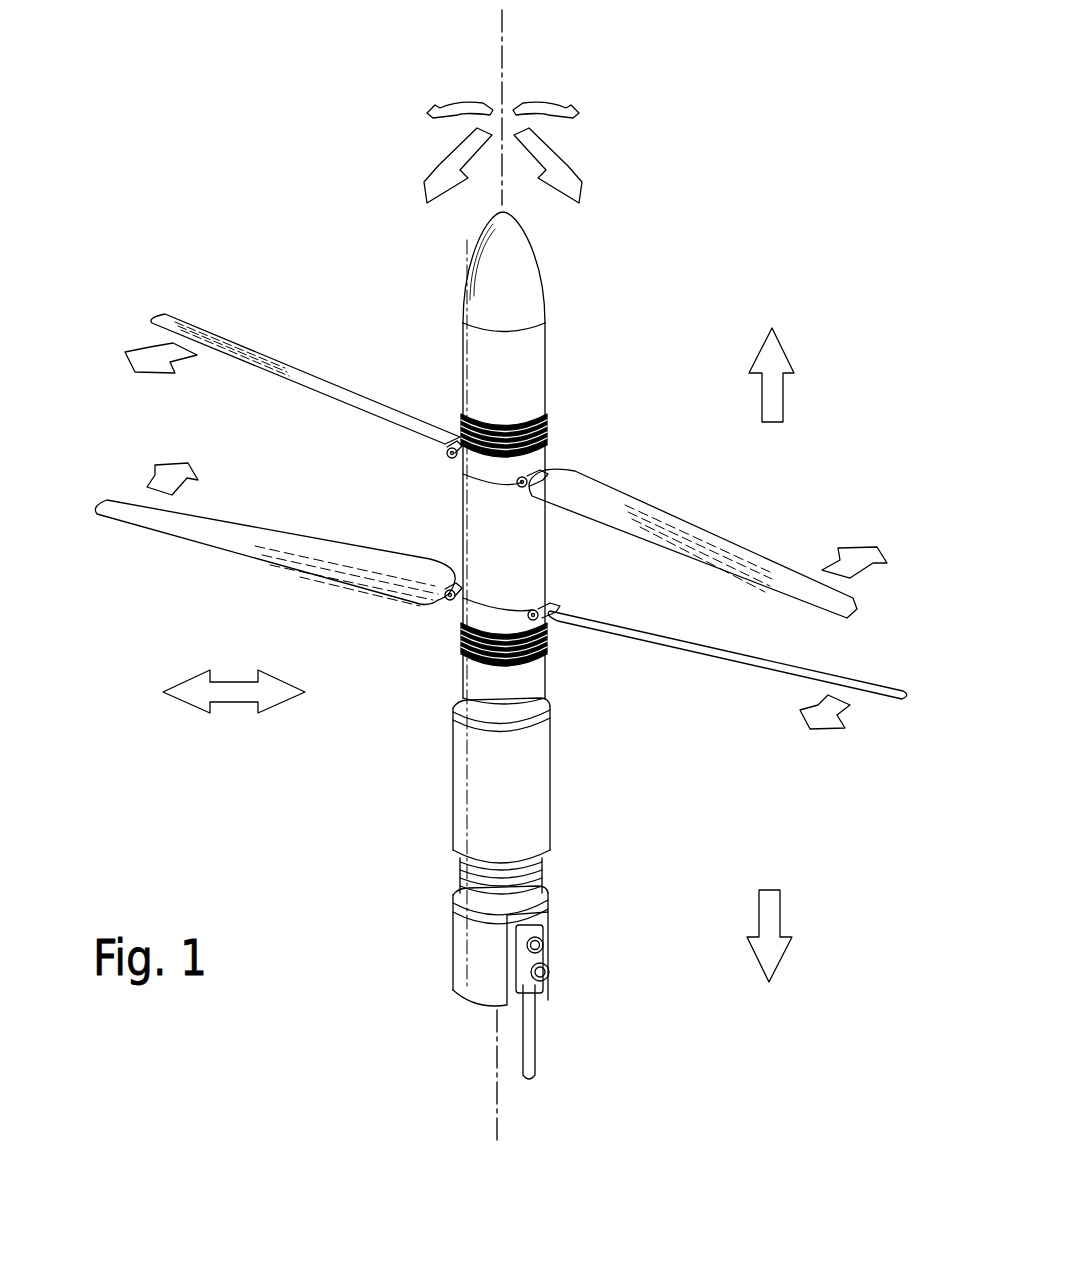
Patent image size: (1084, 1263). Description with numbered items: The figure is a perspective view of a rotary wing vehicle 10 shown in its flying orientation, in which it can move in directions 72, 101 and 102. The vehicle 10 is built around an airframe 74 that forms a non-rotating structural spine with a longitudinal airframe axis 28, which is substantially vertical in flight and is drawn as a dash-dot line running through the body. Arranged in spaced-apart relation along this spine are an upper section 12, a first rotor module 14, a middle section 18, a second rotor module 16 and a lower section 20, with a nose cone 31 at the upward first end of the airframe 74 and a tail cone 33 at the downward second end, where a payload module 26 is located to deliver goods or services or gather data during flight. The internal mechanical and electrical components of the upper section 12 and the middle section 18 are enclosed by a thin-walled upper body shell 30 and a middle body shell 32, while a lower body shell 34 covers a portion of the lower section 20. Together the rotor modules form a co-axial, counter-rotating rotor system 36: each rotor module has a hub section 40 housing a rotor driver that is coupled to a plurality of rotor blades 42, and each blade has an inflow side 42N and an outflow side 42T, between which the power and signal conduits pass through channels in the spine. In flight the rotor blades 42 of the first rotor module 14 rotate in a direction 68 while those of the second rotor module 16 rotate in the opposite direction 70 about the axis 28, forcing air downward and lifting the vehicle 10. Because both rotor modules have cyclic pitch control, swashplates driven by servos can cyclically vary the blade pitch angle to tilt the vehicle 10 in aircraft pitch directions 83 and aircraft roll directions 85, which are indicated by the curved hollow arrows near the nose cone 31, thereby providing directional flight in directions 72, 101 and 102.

The rotary wing vehicle 10 is at (722, 203).
The upper section 12 is at (444, 592).
The first rotor module 14 is at (573, 430).
The second rotor module 16 is at (438, 655).
The middle section 18 is at (345, 474).
The lower section 20 is at (506, 796).
The payload module 26 is at (432, 982).
The airframe axis 28 is at (502, 35).
The upper body shell 30 is at (506, 360).
The nose cone 31 is at (548, 290).
The middle body shell 32 is at (503, 587).
The tail cone 33 is at (455, 968).
The lower body shell 34 is at (505, 785).
The rotor system 36 is at (410, 322).
The hub section 40 is at (445, 460).
The rotor blade 42 is at (508, 509).
The inflow side 42N is at (508, 515).
The outflow side 42T is at (314, 594).
The rotation direction of first rotor module 68 is at (148, 352).
The rotation direction of second rotor module 70 is at (155, 470).
The flight direction 72 is at (207, 702).
The airframe 74 is at (452, 880).
The aircraft pitch directions 83 is at (428, 176).
The aircraft roll directions 85 is at (468, 98).
The flight direction 101 is at (783, 397).
The flight direction 102 is at (781, 908).